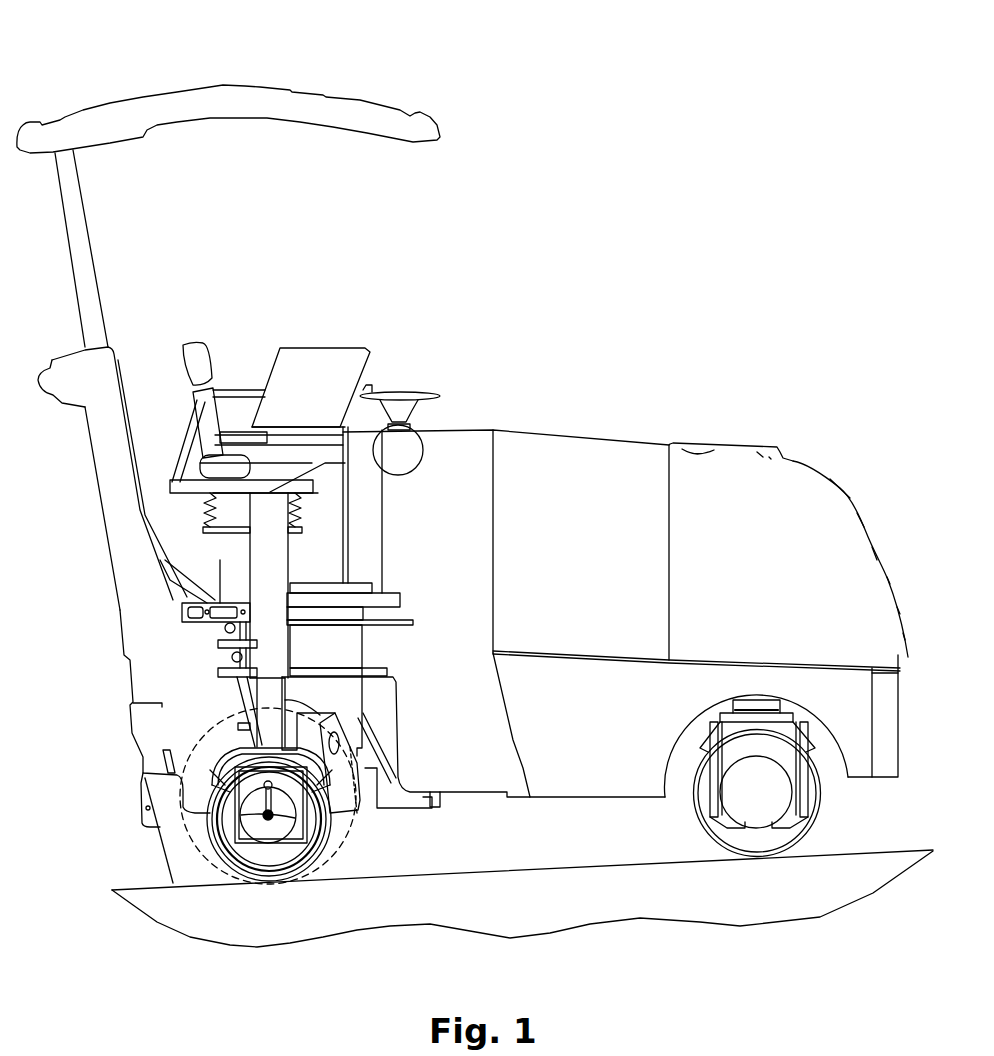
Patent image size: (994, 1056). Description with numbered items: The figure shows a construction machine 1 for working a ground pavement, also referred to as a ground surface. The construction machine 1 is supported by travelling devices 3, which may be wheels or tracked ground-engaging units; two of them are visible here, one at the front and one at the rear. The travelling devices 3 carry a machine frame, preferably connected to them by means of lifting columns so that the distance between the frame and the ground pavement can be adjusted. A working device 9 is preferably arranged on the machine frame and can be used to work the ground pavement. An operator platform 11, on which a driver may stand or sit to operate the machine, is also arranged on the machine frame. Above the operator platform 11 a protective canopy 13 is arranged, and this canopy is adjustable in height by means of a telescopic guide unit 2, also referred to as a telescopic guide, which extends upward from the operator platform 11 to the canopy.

The construction machine 1 is at (566, 392).
The telescopic guide unit 2 is at (110, 238).
The travelling devices 3 is at (270, 882).
The working device 9 is at (323, 863).
The operator platform 11 is at (247, 325).
The protective canopy 13 is at (232, 98).